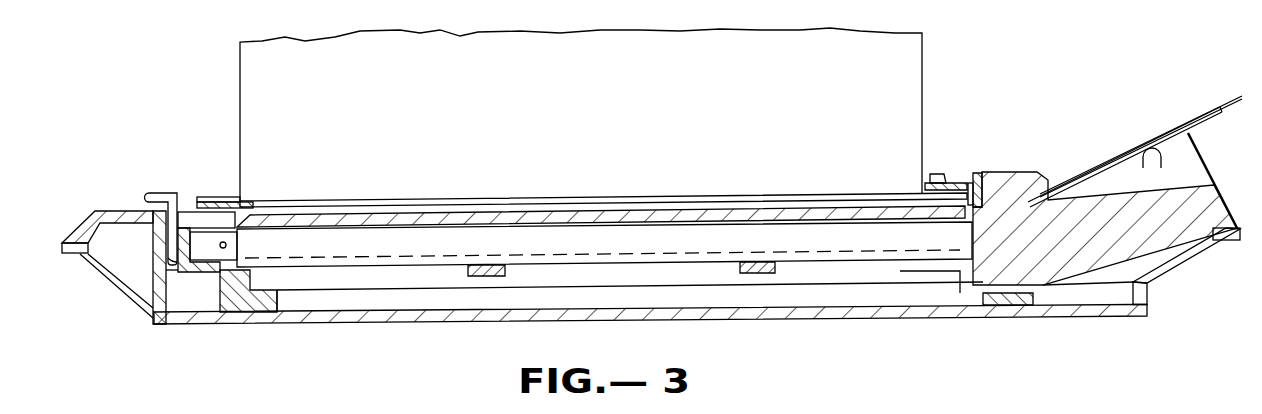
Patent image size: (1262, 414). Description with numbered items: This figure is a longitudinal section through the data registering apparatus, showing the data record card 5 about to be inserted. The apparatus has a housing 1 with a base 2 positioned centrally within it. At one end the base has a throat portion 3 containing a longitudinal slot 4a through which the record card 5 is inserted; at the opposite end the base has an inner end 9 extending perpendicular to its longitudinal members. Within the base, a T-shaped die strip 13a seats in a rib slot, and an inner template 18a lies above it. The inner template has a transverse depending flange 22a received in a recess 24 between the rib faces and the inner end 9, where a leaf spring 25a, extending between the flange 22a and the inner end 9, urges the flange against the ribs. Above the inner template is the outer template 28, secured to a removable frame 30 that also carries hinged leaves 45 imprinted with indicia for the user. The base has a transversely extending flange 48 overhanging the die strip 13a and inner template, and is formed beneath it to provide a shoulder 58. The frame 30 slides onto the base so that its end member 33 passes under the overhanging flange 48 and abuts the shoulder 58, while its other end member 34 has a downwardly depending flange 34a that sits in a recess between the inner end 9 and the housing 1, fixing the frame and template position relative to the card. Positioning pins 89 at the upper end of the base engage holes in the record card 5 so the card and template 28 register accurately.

The housing 1 is at (95, 212).
The base 2 is at (1157, 232).
The throat portion 3 is at (1214, 163).
The longitudinally directed slot 4a is at (1058, 185).
The data record card 5 is at (1172, 115).
The inner end 9 is at (145, 292).
The T-shaped die strip 13a is at (698, 235).
The inner template 18a is at (812, 207).
The flange 22a is at (203, 243).
The recess 24 is at (197, 223).
The leaf spring 25a is at (232, 212).
The outer template 28 is at (700, 200).
The frame 30 is at (167, 195).
The end member 33 is at (948, 178).
The end member 34 is at (207, 204).
The downwardly depending flange 34a is at (168, 258).
The leaves 45 is at (922, 118).
The transversely extending flange 48 is at (1020, 173).
The shoulder 58 is at (975, 183).
The positioning pins 89 is at (1190, 142).